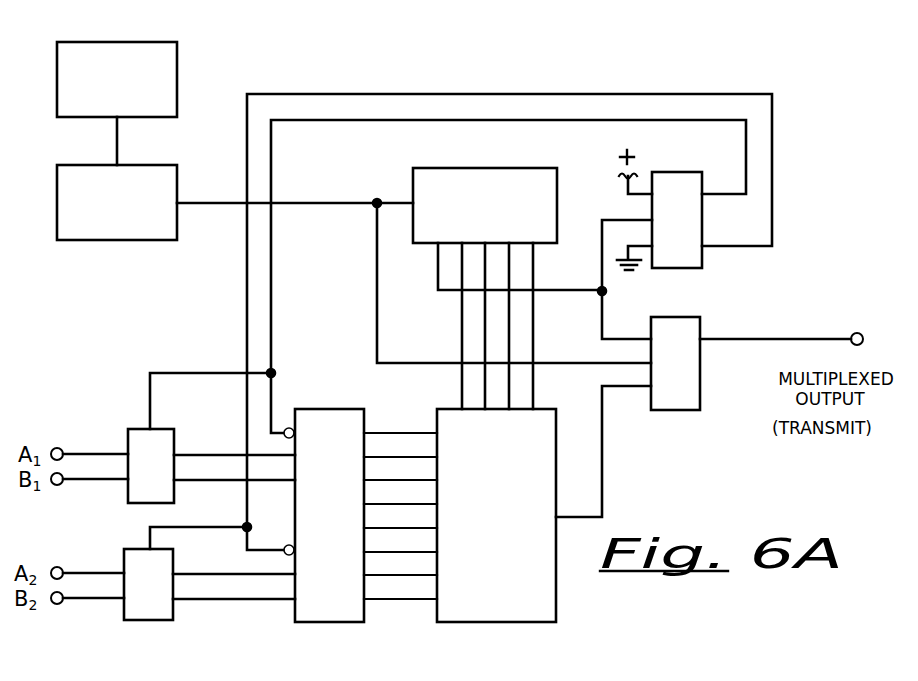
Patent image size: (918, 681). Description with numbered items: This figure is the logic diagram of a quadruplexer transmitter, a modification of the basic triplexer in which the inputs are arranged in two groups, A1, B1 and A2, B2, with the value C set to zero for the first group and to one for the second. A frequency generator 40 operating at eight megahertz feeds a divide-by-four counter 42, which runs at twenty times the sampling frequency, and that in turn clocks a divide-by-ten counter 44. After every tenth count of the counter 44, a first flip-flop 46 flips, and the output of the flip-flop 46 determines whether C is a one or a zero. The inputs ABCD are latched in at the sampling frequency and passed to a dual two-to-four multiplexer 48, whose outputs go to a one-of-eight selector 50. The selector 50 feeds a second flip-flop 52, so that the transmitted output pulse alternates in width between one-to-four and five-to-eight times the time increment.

The frequency generator 40 is at (140, 33).
The ÷4 counter 42 is at (117, 223).
The ÷10 counter 44 is at (485, 192).
The first FF 46 is at (677, 206).
The dual 2 to 4 multiplexer 48 is at (329, 535).
The 1 of 8 selector 50 is at (496, 535).
The second FF 52 is at (675, 381).